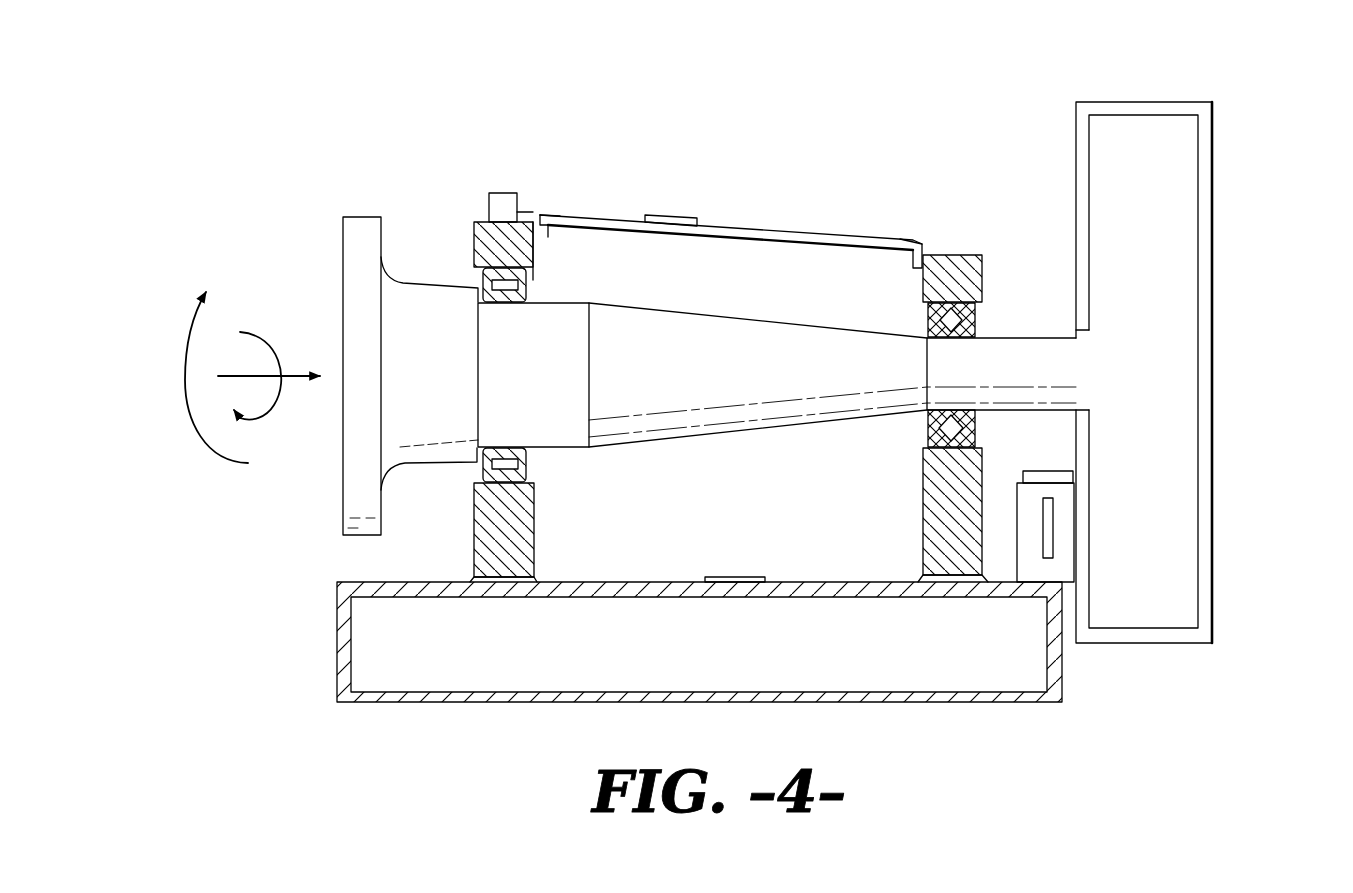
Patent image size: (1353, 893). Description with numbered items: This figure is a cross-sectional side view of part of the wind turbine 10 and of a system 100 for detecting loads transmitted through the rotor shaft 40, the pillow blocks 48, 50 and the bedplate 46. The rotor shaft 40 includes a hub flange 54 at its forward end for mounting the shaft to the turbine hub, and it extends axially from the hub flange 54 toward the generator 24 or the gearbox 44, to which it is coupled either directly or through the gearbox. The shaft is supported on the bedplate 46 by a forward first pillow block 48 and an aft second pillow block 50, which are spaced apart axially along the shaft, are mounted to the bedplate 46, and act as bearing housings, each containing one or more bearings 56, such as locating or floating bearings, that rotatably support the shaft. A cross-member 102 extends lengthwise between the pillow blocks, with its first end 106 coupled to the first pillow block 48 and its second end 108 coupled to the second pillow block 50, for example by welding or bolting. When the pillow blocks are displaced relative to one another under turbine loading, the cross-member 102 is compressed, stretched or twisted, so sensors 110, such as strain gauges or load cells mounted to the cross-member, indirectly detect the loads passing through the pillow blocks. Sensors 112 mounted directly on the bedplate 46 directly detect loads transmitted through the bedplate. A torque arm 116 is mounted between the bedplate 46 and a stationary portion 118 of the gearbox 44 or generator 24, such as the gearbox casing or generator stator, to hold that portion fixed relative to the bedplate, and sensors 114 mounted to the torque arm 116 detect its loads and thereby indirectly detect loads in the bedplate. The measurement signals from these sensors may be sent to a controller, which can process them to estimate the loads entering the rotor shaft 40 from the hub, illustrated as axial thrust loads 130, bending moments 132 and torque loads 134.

The wind turbine 10 is at (230, 136).
The system 100 is at (546, 148).
The generator 24 is at (1203, 372).
The gearbox 44 is at (1203, 372).
The rotor shaft 40 is at (694, 386).
The bedplate 46 is at (336, 628).
The first pillow block 48 is at (522, 534).
The second pillow block 50 is at (940, 490).
The hub flange 54 is at (345, 240).
The bearings 56 is at (527, 453).
The first cross-member 102 is at (795, 228).
The first end 106 is at (557, 214).
The second end 108 is at (903, 242).
The sensors 110 is at (500, 198).
The sensors 112 is at (730, 576).
The sensors 114 is at (1048, 527).
The torque arm 116 is at (1063, 567).
The stationary portion 118 is at (1205, 400).
The axial thrust loads 130 is at (282, 370).
The bending moments 132 is at (183, 365).
The torque loads 134 is at (262, 408).